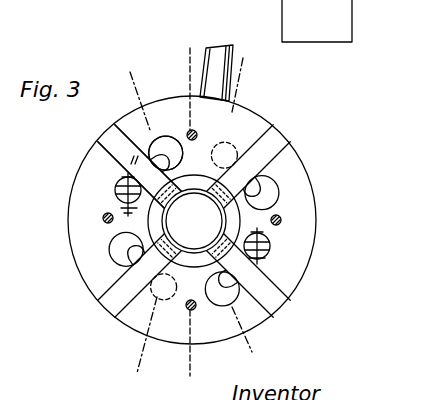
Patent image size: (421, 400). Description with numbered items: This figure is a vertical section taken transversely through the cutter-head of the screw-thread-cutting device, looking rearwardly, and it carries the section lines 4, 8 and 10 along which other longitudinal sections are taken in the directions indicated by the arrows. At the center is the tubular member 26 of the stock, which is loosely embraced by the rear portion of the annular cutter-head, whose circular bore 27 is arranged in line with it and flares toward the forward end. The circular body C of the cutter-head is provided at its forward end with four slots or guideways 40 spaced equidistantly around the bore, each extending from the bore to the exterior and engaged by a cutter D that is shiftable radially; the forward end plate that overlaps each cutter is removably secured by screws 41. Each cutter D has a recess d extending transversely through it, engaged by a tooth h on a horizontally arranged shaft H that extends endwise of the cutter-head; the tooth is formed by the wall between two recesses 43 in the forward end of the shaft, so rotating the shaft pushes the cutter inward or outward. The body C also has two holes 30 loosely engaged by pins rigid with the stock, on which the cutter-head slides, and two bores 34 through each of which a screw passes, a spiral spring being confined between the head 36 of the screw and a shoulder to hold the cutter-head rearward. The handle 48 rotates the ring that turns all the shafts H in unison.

The section line 4— 4 is at (200, 53).
The section line 8— 8 is at (238, 70).
The section line 10— 10 is at (133, 70).
The tubular member 26 is at (216, 223).
The circular bore 27 is at (240, 222).
The holes 30 is at (274, 124).
The horizontal bores 34 is at (123, 212).
The head of screw 36 is at (116, 187).
The slots or guideways 40 is at (107, 153).
The screws 41 is at (190, 130).
The recesses 43 is at (236, 322).
The handle 48 is at (233, 45).
The body of the cutter-head C is at (307, 192).
The cutters D is at (110, 132).
The shaft H is at (169, 136).
The recess d is at (143, 153).
The tooth h is at (189, 234).